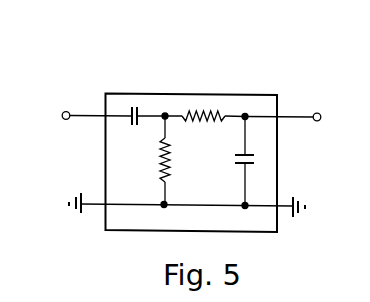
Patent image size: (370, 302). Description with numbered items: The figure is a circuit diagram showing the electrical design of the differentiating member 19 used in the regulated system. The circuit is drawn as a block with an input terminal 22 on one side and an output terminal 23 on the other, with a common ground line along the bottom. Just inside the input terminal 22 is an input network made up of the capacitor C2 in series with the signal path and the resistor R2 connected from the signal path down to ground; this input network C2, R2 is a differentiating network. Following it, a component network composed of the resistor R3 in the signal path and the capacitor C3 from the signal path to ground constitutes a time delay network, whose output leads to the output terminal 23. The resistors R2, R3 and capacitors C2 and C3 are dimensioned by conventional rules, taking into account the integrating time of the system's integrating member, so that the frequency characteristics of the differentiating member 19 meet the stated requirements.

The differentiating member 19 is at (206, 82).
The input terminal 22 is at (88, 114).
The output terminal 23 is at (296, 120).
The capacitor C2 is at (154, 130).
The resistor R2 is at (178, 160).
The resistor R3 is at (213, 132).
The capacitor C3 is at (255, 161).